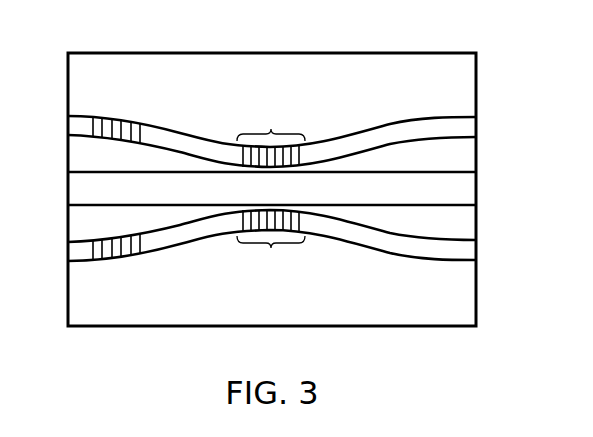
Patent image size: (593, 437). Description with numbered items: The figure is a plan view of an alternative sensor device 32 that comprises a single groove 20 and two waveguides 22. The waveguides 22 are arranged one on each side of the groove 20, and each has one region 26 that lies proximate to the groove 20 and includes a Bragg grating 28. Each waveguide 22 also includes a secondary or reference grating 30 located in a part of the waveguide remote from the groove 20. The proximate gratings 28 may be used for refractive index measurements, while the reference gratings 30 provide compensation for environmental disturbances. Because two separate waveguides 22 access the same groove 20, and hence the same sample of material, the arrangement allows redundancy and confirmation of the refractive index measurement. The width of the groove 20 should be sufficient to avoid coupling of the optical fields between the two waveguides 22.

The groove 20 is at (466, 191).
The waveguide 22 is at (466, 127).
The region 26 is at (271, 192).
The Bragg grating 28 is at (250, 148).
The reference grating 30 is at (93, 136).
The device 32 is at (490, 57).